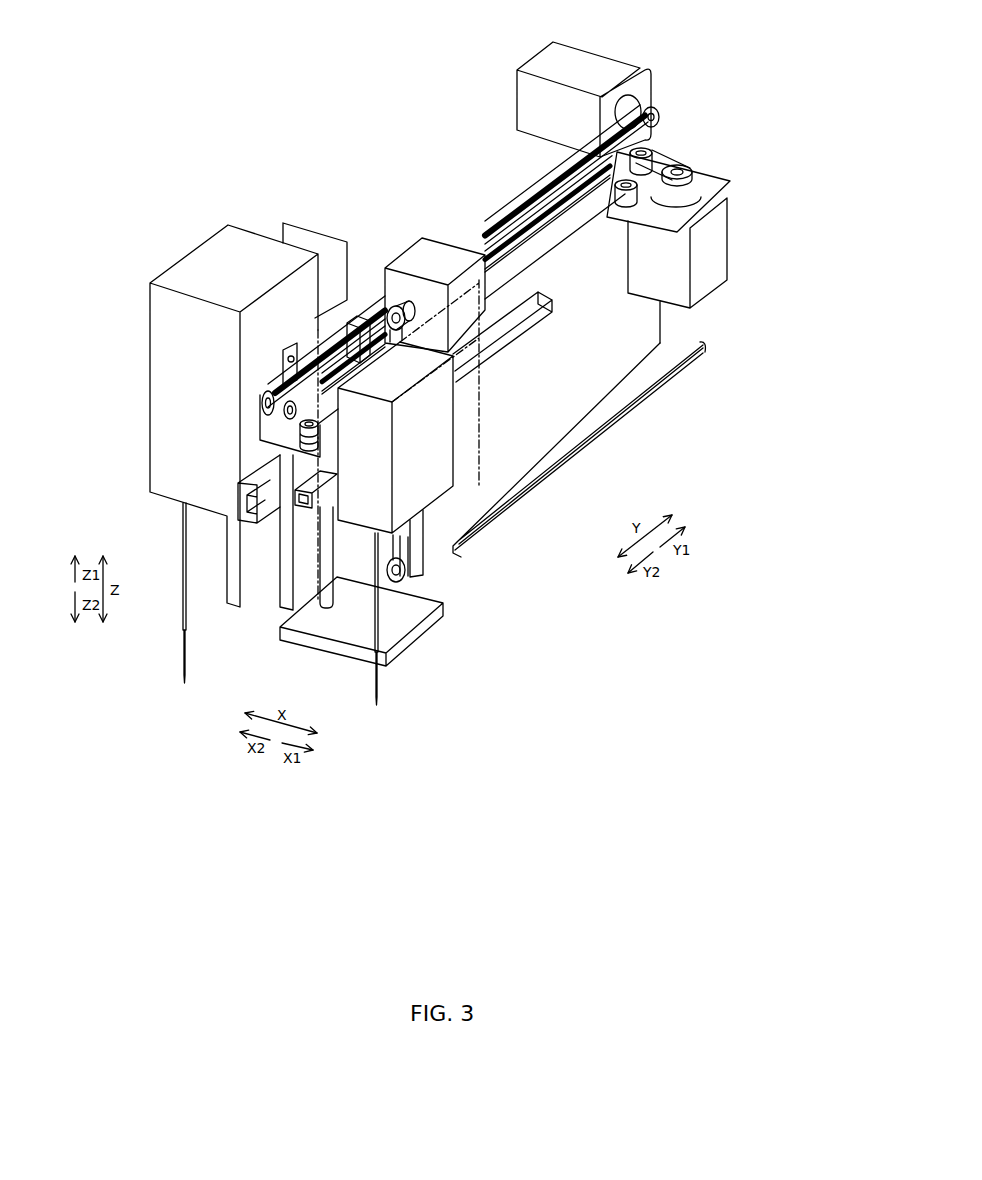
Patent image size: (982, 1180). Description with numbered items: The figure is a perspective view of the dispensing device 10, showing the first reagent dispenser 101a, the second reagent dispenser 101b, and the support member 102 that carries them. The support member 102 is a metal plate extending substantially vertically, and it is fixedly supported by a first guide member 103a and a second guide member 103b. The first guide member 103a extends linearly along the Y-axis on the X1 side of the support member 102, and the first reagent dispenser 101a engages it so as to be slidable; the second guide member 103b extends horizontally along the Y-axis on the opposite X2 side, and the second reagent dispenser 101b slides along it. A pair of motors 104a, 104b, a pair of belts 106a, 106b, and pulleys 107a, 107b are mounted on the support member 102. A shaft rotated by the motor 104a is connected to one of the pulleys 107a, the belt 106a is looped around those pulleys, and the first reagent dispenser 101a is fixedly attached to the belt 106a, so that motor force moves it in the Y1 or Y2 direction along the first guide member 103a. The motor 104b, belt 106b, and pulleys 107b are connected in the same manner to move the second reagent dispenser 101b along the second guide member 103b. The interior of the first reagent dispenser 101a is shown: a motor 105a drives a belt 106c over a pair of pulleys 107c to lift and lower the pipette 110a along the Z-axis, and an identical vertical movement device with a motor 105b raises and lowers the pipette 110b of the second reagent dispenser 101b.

The dispensing device 10 is at (342, 90).
The first reagent dispenser 101a is at (478, 420).
The second reagent dispenser 101b is at (158, 395).
The support member 102 is at (283, 605).
The first guide member 103a is at (545, 298).
The second guide member 103b is at (250, 500).
The motor 104a is at (710, 252).
The motor 104b is at (587, 58).
The motor 105a is at (440, 250).
The motor 105b is at (303, 237).
The belt 106a is at (560, 247).
The belt 106b is at (550, 183).
The belt 106c is at (420, 552).
The pulleys 107a is at (650, 155).
The pulleys 107b is at (653, 118).
The pair of pulleys 107c is at (388, 312).
The pipette 110a is at (382, 697).
The pipette 110b is at (182, 671).